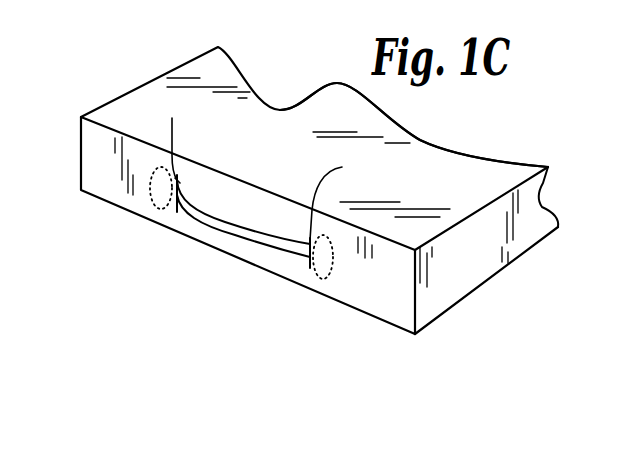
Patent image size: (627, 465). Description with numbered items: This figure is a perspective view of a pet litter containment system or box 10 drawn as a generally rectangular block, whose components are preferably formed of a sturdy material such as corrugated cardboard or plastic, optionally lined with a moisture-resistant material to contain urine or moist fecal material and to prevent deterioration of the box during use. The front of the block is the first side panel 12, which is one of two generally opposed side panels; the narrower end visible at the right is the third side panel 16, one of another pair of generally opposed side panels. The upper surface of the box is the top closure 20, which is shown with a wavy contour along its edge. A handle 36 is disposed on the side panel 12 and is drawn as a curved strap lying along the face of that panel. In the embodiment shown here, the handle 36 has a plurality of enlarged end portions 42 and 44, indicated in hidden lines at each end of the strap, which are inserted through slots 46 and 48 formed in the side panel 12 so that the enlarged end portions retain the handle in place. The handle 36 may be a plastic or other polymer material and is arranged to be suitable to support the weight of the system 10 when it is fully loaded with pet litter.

The pet litter containment system 10 is at (112, 73).
The first side panel 12 is at (110, 165).
The third side panel 16 is at (468, 250).
The top closure 20 is at (458, 167).
The handle 36 is at (250, 227).
The enlarged end portion 42 is at (325, 280).
The enlarged end portion 44 is at (142, 212).
The slot 46 is at (175, 139).
The slot 48 is at (346, 195).